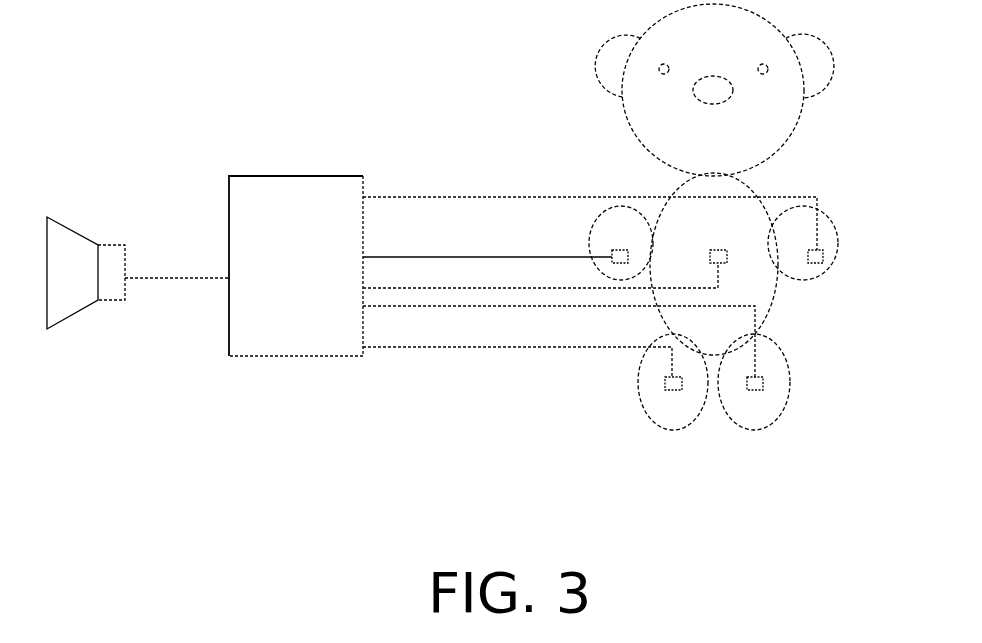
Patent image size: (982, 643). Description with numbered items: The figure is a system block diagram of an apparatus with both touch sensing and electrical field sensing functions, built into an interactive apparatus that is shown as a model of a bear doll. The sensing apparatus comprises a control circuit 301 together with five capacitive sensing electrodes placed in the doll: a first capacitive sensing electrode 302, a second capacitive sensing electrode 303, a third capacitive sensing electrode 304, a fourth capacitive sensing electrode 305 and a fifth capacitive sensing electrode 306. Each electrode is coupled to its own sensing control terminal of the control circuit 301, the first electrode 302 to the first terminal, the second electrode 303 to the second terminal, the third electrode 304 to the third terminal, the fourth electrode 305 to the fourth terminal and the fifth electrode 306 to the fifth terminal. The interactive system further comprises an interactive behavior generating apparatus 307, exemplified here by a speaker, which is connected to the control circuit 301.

The control circuit 301 is at (253, 192).
The first capacitive sensing electrode 302 is at (617, 250).
The second capacitive sensing electrode 303 is at (823, 258).
The third capacitive sensing electrode 304 is at (670, 390).
The fourth capacitive sensing electrode 305 is at (752, 390).
The fifth capacitive sensing electrode 306 is at (718, 250).
The interactive behavior generating apparatus 307 is at (88, 248).